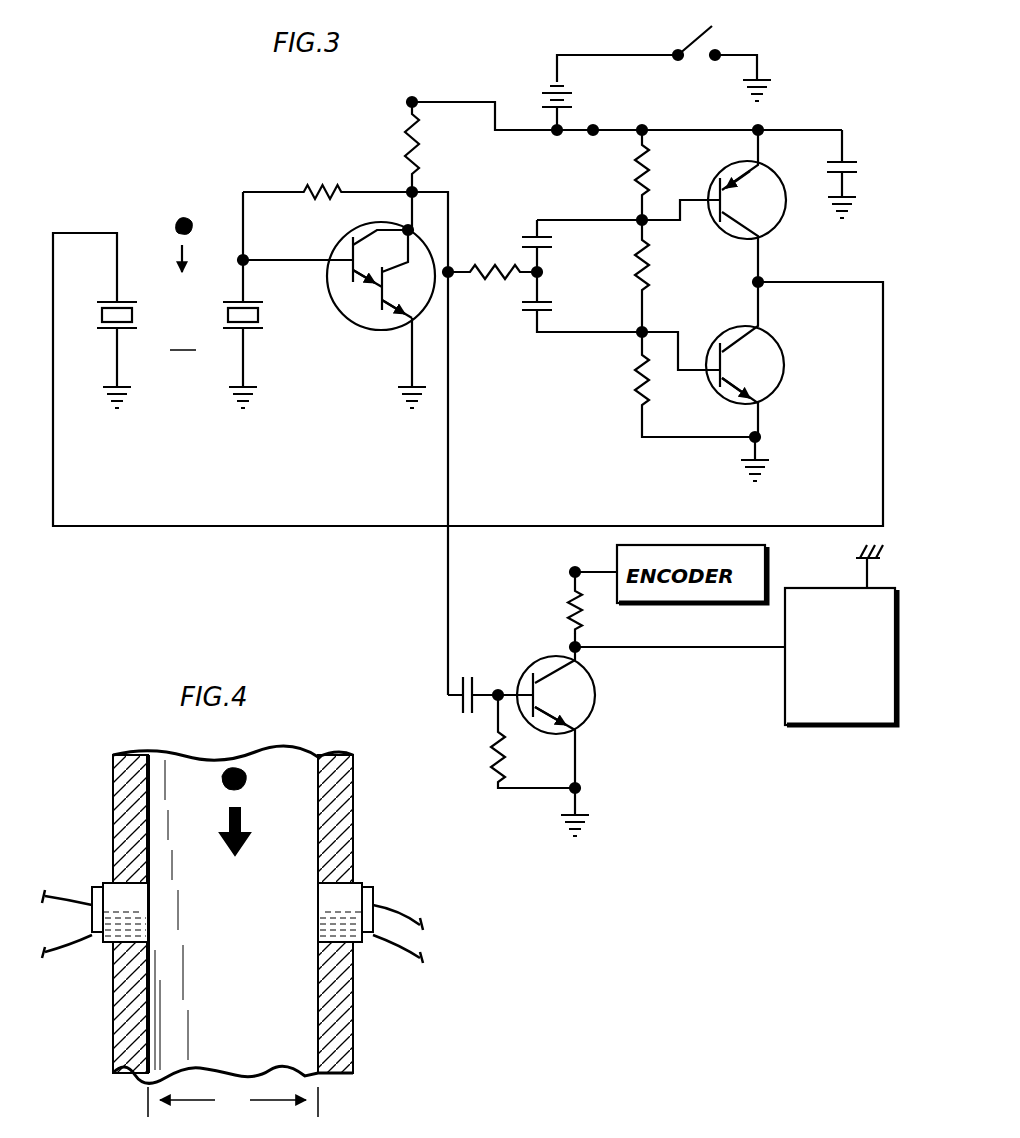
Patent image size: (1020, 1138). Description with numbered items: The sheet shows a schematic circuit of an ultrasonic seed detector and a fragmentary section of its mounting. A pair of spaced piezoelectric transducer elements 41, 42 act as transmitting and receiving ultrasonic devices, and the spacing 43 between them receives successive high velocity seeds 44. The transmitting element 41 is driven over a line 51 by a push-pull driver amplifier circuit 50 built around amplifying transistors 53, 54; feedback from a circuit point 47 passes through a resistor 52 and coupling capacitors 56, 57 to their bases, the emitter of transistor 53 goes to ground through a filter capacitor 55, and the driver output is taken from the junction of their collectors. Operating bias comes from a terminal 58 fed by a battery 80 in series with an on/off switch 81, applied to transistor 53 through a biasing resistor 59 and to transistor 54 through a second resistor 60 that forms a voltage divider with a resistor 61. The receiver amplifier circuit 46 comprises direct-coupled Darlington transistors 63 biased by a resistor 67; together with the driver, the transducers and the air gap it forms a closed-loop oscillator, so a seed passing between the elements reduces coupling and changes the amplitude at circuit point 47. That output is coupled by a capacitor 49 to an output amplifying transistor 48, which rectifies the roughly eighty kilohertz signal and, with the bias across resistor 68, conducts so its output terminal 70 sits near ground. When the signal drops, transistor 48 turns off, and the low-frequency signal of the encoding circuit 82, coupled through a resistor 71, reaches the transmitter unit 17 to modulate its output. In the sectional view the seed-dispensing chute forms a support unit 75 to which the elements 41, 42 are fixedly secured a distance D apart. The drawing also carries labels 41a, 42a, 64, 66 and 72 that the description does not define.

In FIG. 3, the transmitter unit 17 is at (787, 722).
In FIG. 3, the transmitting piezoelectric transducer element 41 is at (105, 300).
In FIG. 4, the transmitting piezoelectric transducer element 41 is at (95, 891).
In FIG. 4, the passage 41a is at (233, 1036).
In FIG. 3, the receiving piezoelectric transducer element 42 is at (246, 300).
In FIG. 4, the receiving piezoelectric transducer element 42 is at (370, 893).
In FIG. 4, the direction of particle travel 42a is at (257, 833).
In FIG. 3, the spacing 43 is at (183, 338).
In FIG. 3, the seed 44 is at (178, 222).
In FIG. 4, the seed 44 is at (223, 756).
In FIG. 3, the receiver amplifier circuit 46 is at (420, 186).
In FIG. 3, the circuit point 47 is at (450, 300).
In FIG. 3, the output amplifying transistor 48 is at (525, 670).
In FIG. 3, the coupling capacitor 49 is at (458, 700).
In FIG. 3, the push-pull driver amplifier circuit 50 is at (826, 258).
In FIG. 3, the line 51 is at (490, 525).
In FIG. 3, the feedback resistor 52 is at (460, 290).
In FIG. 3, the amplifying transistor 53 is at (712, 185).
In FIG. 3, the amplifying transistor 54 is at (768, 345).
In FIG. 3, the filter capacitor 55 is at (846, 165).
In FIG. 3, the coupling capacitor 56 is at (545, 250).
In FIG. 3, the coupling capacitor 57 is at (530, 312).
In FIG. 3, the terminal 58 is at (593, 128).
In FIG. 3, the biasing resistor 59 is at (638, 150).
In FIG. 3, the second resistor 60 is at (648, 280).
In FIG. 3, the resistor 61 is at (650, 380).
In FIG. 3, the Darlington transistor pair 63 is at (355, 325).
In FIG. 3, the junction 64 is at (412, 100).
In FIG. 3, the resistor 66 is at (405, 150).
In FIG. 3, the bias resistor 67 is at (318, 188).
In FIG. 3, the resistor 68 is at (505, 750).
In FIG. 3, the output terminal 70 is at (580, 650).
In FIG. 3, the resistor 71 is at (570, 610).
In FIG. 3, the junction 72 is at (570, 570).
In FIG. 4, the support unit 75 is at (362, 800).
In FIG. 3, the battery 80 is at (548, 95).
In FIG. 3, the on/off switch 81 is at (713, 66).
In FIG. 3, the encoding circuit 82 is at (680, 631).